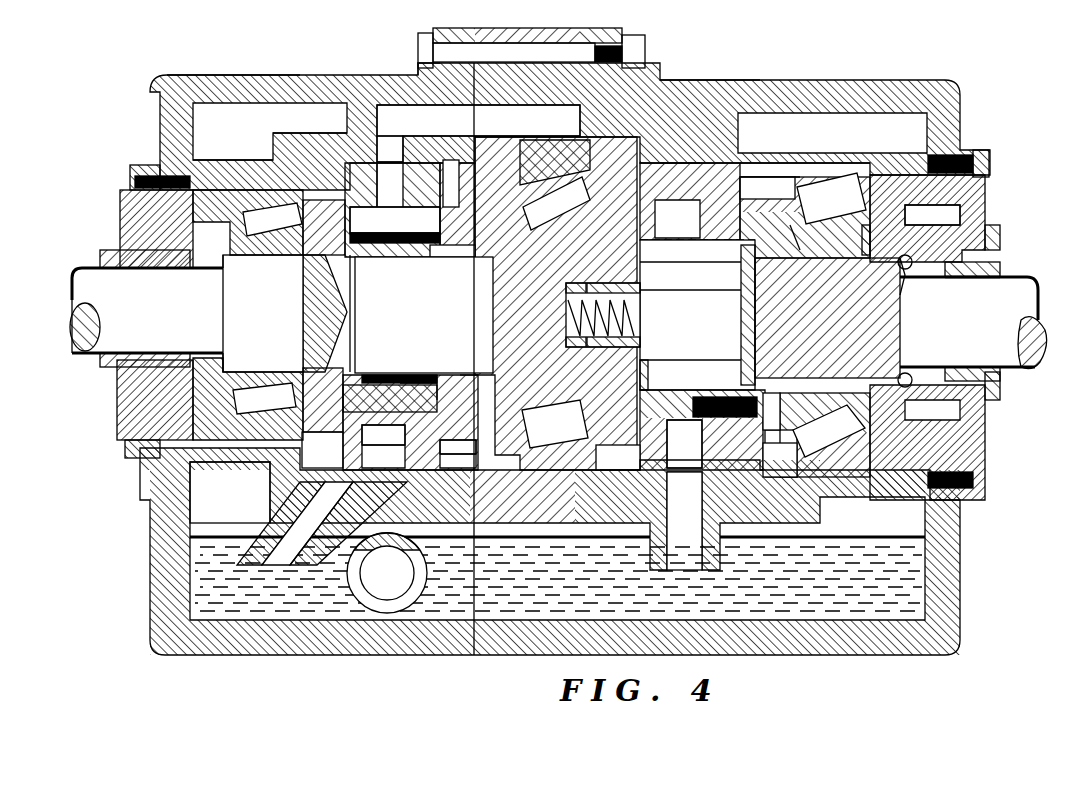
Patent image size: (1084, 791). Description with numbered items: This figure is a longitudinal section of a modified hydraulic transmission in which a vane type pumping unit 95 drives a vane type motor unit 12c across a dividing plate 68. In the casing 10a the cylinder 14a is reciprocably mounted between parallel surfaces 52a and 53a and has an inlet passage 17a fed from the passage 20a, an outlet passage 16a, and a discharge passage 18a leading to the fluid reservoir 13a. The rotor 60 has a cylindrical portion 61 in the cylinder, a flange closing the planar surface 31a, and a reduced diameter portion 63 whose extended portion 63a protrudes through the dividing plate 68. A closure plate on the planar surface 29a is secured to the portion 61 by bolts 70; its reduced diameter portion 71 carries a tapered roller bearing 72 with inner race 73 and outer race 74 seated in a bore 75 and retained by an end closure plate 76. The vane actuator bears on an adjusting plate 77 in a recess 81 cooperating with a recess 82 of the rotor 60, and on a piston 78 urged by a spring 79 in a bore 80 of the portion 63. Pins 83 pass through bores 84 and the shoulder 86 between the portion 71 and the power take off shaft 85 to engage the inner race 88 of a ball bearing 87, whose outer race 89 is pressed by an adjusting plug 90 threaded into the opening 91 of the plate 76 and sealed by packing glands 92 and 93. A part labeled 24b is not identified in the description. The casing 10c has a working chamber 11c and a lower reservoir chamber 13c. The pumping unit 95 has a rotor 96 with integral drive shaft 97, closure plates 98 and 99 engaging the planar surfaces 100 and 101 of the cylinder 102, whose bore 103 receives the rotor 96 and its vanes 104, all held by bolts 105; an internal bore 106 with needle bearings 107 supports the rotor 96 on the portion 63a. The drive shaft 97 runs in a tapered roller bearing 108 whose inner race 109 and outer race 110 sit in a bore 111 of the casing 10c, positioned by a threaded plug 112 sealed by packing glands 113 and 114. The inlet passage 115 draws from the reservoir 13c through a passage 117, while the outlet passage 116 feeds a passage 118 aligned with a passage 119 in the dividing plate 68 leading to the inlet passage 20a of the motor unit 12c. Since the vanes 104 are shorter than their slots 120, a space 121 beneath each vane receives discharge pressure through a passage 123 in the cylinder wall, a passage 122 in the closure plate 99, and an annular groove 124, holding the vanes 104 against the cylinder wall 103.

The casing 10a is at (960, 100).
The casing 10c is at (192, 75).
The internal working chamber 11c is at (322, 450).
The motor unit 12c is at (738, 197).
The fluid reservoir 13a is at (950, 570).
The fluid reservoir chamber 13c is at (165, 522).
The cylinder 14a is at (697, 233).
The outlet passage 16a is at (665, 468).
The inlet passage 17a is at (690, 175).
The discharge passage 18a is at (676, 519).
The passage 20a is at (655, 100).
The chamber 24b is at (706, 358).
The planar surface 29a is at (700, 452).
The planar surface 31a is at (640, 452).
The parallel surface 52a is at (758, 177).
The parallel surface 53a is at (750, 470).
The rotor 60 is at (712, 392).
The cylindrical portion 61 is at (650, 375).
The reduced diameter portion 63 is at (530, 225).
The extended portion 63a is at (440, 297).
The dividing plate 68 is at (524, 33).
The bolts 70 is at (790, 422).
The reduced diameter portion 71 is at (798, 224).
The tapered roller bearing 72 is at (805, 215).
The inner race 73 is at (866, 236).
The outer race 74 is at (842, 175).
The cylindrical bore 75 is at (928, 162).
The end closure plate 76 is at (985, 190).
The adjusting plate 77 is at (741, 318).
The piston 78 is at (641, 340).
The spring 79 is at (634, 320).
The bore 80 is at (641, 290).
The recess 81 is at (770, 430).
The recess 82 is at (696, 397).
The pins 83 is at (748, 262).
The bores 84 is at (748, 290).
The power take off shaft 85 is at (1000, 297).
The shoulder 86 is at (908, 278).
The ball bearing 87 is at (905, 254).
The inner race 88 is at (900, 388).
The outer race 89 is at (925, 418).
The adjusting plug 90 is at (998, 264).
The threaded opening 91 is at (958, 212).
The packing gland 92 is at (993, 226).
The packing gland 93 is at (1002, 270).
The pumping unit 95 is at (290, 208).
The rotor 96 is at (392, 376).
The drive shaft 97 is at (95, 358).
The closure plate 98 is at (292, 370).
The closure plate 99 is at (460, 252).
The planar surface 100 is at (441, 448).
The planar surface 101 is at (340, 428).
The cylinder 102 is at (441, 468).
The bore 103 is at (383, 435).
The vanes 104 is at (372, 212).
The bolts 105 is at (464, 370).
The internal bore 106 is at (415, 376).
The needle bearings 107 is at (446, 376).
The tapered roller bearing 108 is at (236, 232).
The inner race 109 is at (263, 311).
The outer race 110 is at (246, 185).
The bore 111 is at (278, 143).
The plug 112 is at (120, 230).
The packing gland 113 is at (148, 172).
The packing gland 114 is at (158, 270).
The inlet passage 115 is at (383, 455).
The outlet passage 116 is at (388, 175).
The passage 117 is at (272, 524).
The passage 118 is at (418, 72).
The passage 119 is at (542, 124).
The slots 120 is at (404, 240).
The space 121 is at (328, 286).
The passage 122 is at (455, 196).
The passage 123 is at (372, 182).
The annular groove 124 is at (393, 219).